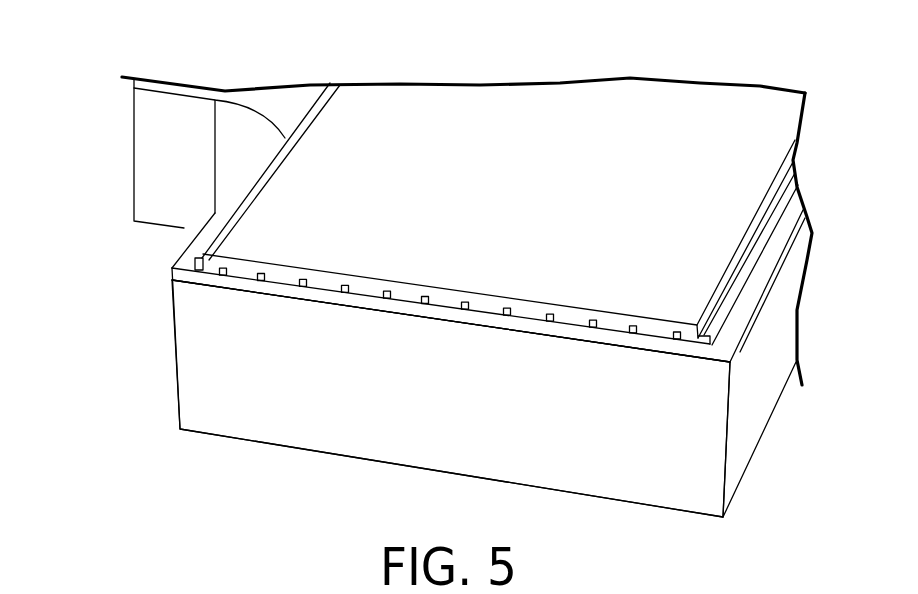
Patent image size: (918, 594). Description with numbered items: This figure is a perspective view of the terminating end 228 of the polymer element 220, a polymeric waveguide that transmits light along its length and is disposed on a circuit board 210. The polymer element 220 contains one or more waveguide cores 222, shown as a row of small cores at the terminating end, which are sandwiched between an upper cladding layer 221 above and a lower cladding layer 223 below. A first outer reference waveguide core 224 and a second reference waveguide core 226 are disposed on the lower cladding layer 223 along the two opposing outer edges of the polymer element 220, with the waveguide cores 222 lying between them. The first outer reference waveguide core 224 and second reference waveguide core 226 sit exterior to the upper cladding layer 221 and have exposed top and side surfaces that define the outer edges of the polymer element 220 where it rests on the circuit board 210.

The circuit board 210 is at (437, 405).
The polymer element 220 is at (483, 131).
The upper cladding layer 221 is at (562, 240).
The waveguide cores 222 is at (268, 272).
The lower cladding layer 223 is at (573, 333).
The first outer reference waveguide core 224 is at (707, 340).
The second reference waveguide core 226 is at (198, 262).
The terminating end 228 is at (377, 332).